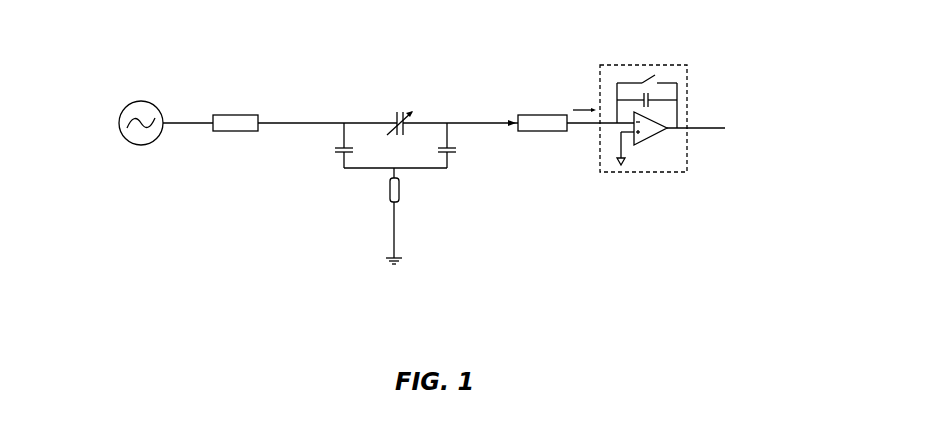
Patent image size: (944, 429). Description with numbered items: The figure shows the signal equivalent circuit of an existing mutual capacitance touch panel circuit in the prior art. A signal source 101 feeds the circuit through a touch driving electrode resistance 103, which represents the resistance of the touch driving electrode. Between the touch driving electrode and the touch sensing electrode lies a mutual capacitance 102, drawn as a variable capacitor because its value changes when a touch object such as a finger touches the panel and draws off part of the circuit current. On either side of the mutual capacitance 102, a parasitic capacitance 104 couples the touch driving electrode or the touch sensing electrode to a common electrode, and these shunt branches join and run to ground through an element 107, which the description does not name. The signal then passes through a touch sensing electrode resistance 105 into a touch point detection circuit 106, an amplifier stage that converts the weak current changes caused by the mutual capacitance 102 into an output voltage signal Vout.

The signal source 101 is at (142, 110).
The mutual capacitance 102 is at (395, 102).
The touch driving electrode resistance 103 is at (238, 115).
The parasitic capacitance 104 is at (327, 162).
The touch sensing electrode resistance 105 is at (540, 108).
The touch point detection circuit 106 is at (668, 163).
The resistor 107 is at (408, 200).